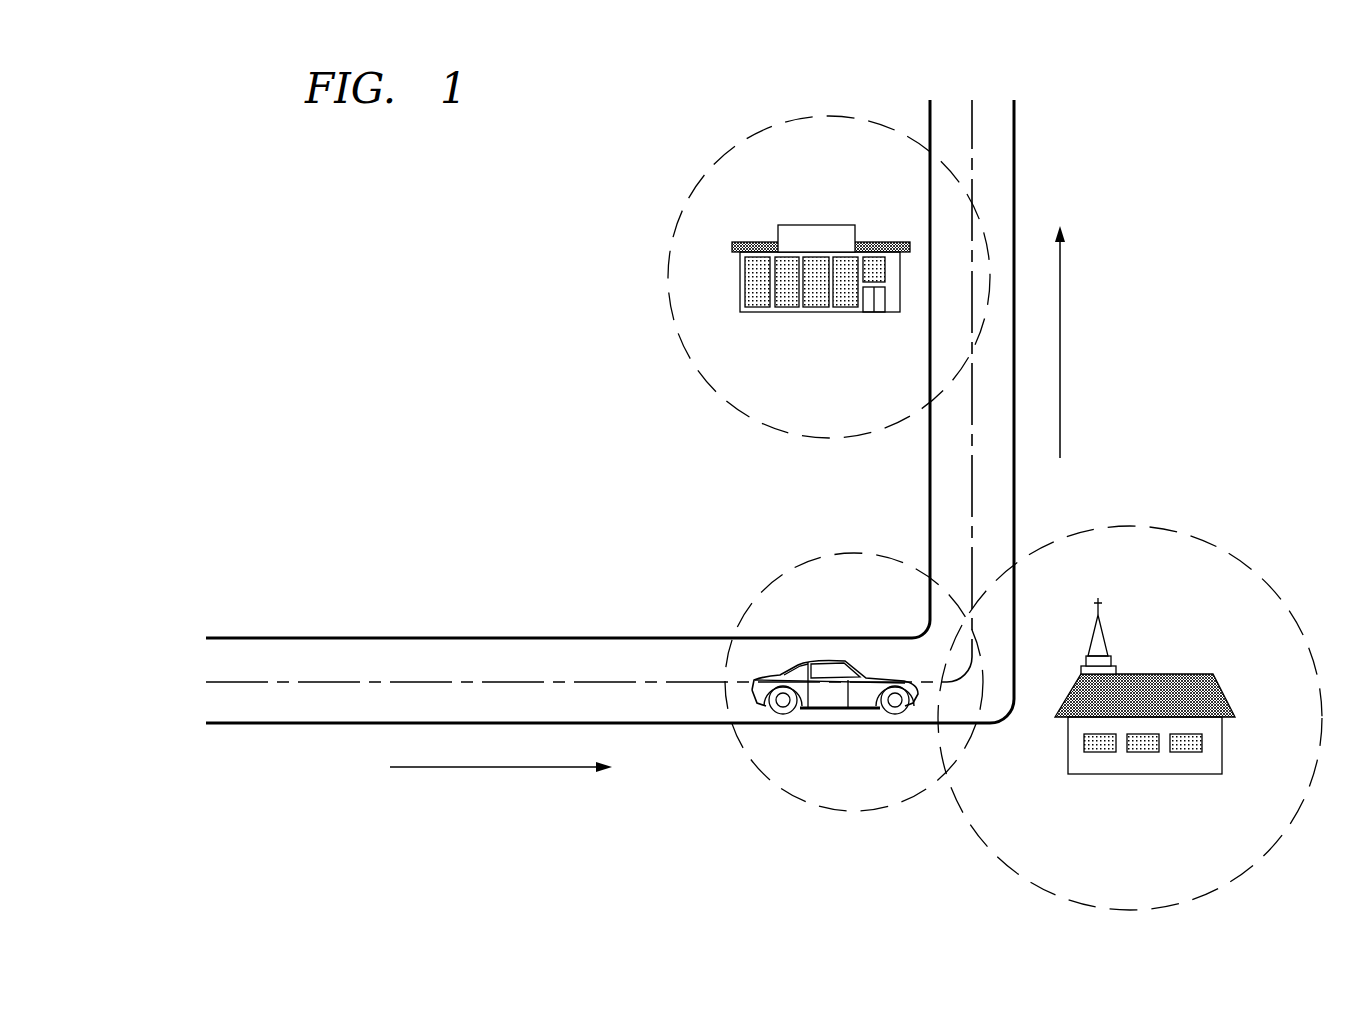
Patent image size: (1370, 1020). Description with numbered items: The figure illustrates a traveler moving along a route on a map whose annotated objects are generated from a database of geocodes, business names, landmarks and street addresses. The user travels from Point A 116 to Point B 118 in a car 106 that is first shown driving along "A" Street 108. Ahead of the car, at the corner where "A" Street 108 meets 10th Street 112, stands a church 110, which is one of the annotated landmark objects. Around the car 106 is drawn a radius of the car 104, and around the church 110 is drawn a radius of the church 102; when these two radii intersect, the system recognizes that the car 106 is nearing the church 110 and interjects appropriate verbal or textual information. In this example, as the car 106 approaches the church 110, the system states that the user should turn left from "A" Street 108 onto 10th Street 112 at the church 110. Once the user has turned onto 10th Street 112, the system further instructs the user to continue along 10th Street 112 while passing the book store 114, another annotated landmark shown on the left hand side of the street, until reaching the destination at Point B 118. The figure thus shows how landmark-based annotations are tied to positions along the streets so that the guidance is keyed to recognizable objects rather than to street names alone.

The radius of the church 102 is at (1263, 578).
The radius of the car 104 is at (812, 807).
The car 106 is at (815, 655).
The "A" Street 108 is at (497, 815).
The church 110 is at (1170, 672).
The 10th Street 112 is at (1167, 333).
The book store 114 is at (812, 225).
The Point A 116 is at (176, 645).
The Point B 118 is at (997, 63).